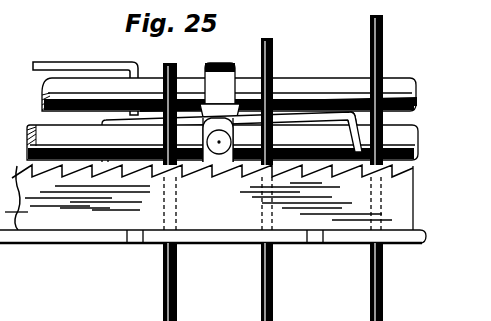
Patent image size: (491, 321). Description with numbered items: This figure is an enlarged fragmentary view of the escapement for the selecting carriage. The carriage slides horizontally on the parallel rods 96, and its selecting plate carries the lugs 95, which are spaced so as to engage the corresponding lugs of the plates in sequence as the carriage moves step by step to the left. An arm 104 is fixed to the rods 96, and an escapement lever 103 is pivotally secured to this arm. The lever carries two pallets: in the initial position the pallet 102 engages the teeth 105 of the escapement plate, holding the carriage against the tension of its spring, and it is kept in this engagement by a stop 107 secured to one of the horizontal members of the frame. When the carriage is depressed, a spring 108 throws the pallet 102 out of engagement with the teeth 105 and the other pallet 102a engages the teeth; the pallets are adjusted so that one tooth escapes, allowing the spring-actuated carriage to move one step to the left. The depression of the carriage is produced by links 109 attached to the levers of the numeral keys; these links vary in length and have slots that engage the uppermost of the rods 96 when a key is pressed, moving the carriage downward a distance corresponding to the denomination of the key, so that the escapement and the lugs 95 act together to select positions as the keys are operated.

The lugs 95 is at (140, 244).
The parallel rods 96 is at (407, 127).
The pallet 102 is at (94, 143).
The pallet 102a is at (352, 142).
The escapement lever 103 is at (170, 127).
The arm 104 is at (220, 93).
The teeth 105 is at (248, 177).
The stop 107 is at (131, 88).
The spring 108 is at (278, 99).
The links 109 is at (178, 300).